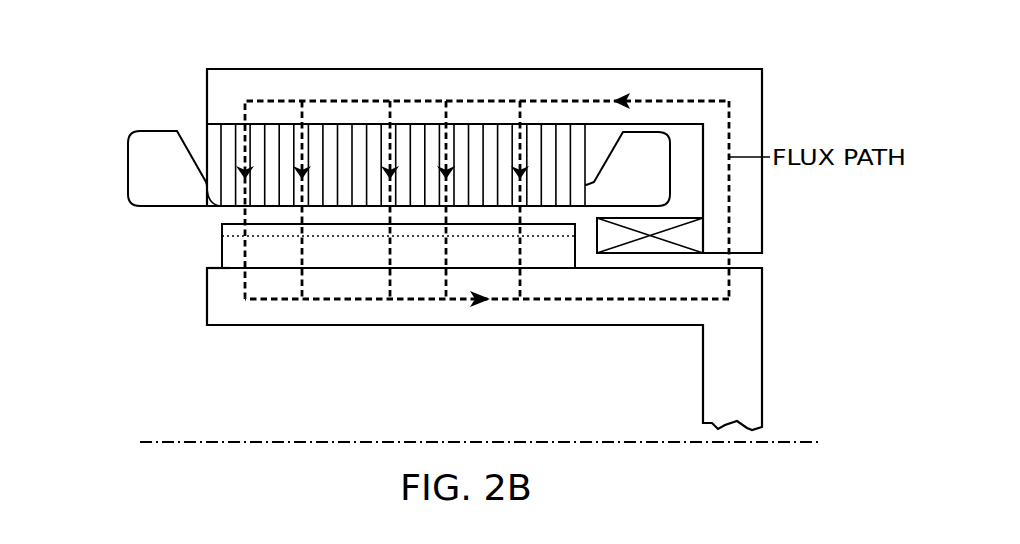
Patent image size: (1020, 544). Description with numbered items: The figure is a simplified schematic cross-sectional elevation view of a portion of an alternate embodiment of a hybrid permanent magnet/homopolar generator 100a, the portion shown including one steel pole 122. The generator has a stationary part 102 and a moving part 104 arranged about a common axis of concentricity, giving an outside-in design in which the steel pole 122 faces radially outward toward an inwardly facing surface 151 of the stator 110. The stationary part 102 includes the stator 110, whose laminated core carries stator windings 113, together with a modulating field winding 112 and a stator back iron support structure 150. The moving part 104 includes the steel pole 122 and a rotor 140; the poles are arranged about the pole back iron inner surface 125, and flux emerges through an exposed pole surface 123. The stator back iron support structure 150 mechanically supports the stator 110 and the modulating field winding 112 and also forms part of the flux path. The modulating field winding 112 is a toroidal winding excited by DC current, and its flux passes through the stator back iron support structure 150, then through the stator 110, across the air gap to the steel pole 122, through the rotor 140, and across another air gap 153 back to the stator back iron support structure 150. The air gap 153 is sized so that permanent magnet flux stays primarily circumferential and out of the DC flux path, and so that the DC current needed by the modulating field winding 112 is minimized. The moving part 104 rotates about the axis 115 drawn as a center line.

The hybrid permanent magnet/homopolar generator 100a is at (168, 45).
The stationary part 102 is at (805, 45).
The moving part 104 is at (808, 292).
The stator 110 is at (221, 130).
The modulating field winding 112 is at (690, 234).
The stator windings 113 is at (92, 140).
The axis of rotation 115 is at (800, 441).
The steel pole 122 is at (222, 237).
The exposed pole surface 123 is at (334, 216).
The pole back iron inner surface 125 is at (213, 268).
The rotor 140 is at (458, 313).
The stator back iron support structure 150 is at (450, 84).
The inwardly facing surface 151 is at (220, 207).
The air gap 153 is at (748, 259).